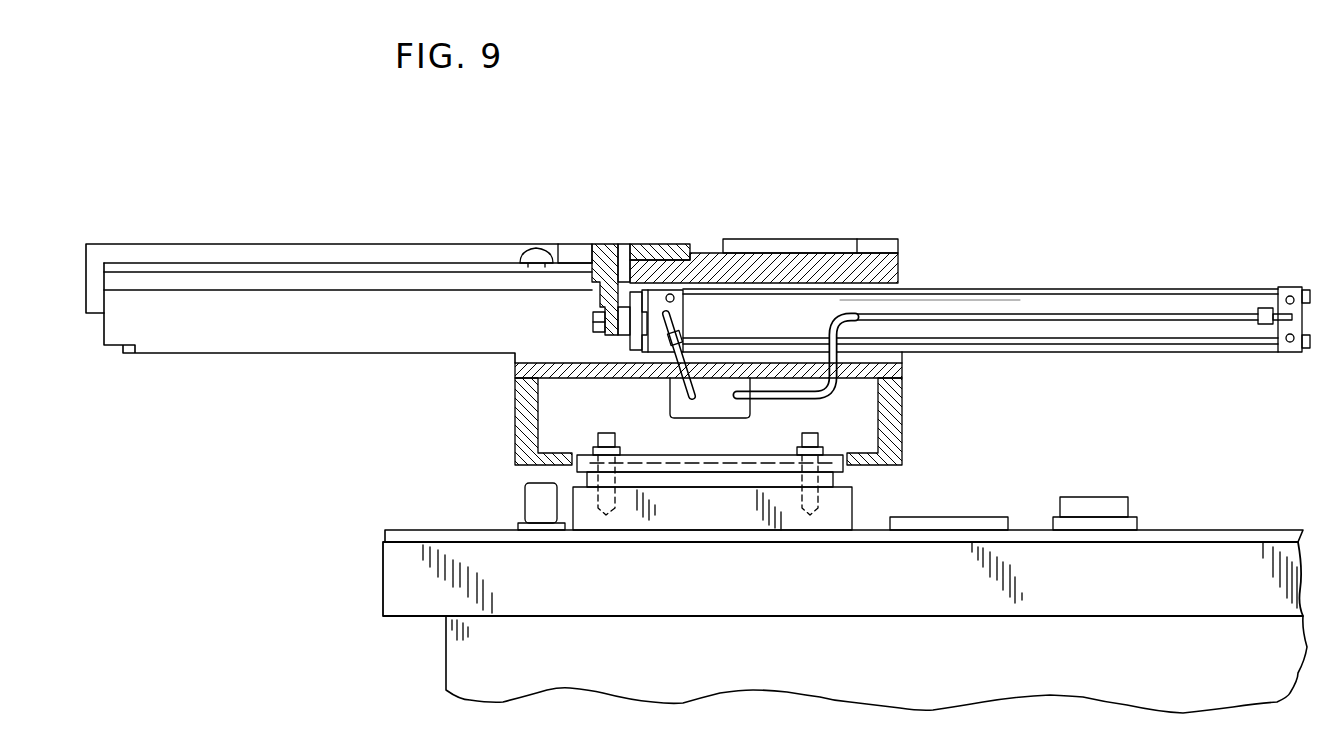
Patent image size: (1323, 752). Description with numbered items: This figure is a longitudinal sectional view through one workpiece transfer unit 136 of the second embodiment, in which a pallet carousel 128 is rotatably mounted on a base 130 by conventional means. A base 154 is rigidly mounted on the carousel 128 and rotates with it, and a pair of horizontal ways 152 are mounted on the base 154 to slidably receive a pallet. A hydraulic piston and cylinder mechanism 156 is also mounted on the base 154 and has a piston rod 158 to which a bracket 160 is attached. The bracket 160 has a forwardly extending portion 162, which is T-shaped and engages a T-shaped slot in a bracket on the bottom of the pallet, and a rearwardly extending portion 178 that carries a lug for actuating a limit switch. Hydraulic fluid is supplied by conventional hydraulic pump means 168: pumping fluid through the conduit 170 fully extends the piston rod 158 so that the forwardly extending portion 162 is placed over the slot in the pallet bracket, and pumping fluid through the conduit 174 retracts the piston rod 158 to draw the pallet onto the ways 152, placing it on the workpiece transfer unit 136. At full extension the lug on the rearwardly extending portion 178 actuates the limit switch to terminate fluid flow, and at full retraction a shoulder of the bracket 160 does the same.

The pallet carousel 128 is at (408, 577).
The base 130 is at (493, 663).
The workpiece transfer unit 136 is at (322, 329).
The horizontal ways 152 is at (262, 245).
The base 154 is at (525, 425).
The hydraulic piston and cylinder mechanism 156 is at (1020, 290).
The piston rod 158 is at (627, 327).
The bracket 160 is at (600, 294).
The forwardly extending portion 162 is at (573, 247).
The hydraulic pump means 168 is at (727, 412).
The conduit 170 is at (1228, 320).
The conduit 174 is at (720, 344).
The rearwardly extending portion 178 is at (827, 263).